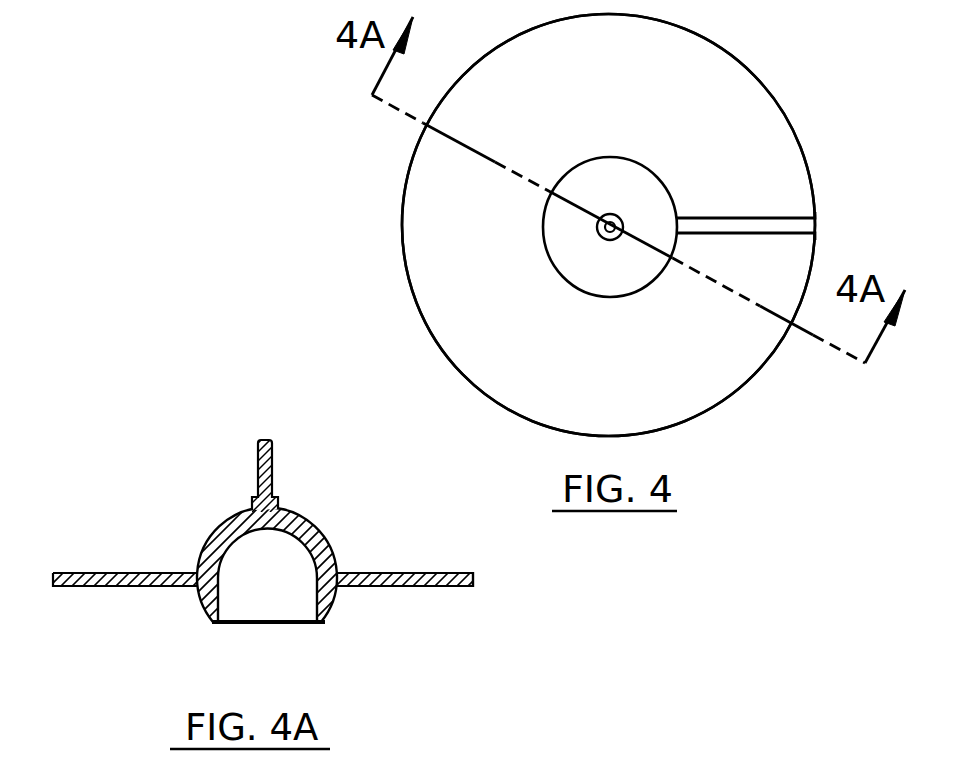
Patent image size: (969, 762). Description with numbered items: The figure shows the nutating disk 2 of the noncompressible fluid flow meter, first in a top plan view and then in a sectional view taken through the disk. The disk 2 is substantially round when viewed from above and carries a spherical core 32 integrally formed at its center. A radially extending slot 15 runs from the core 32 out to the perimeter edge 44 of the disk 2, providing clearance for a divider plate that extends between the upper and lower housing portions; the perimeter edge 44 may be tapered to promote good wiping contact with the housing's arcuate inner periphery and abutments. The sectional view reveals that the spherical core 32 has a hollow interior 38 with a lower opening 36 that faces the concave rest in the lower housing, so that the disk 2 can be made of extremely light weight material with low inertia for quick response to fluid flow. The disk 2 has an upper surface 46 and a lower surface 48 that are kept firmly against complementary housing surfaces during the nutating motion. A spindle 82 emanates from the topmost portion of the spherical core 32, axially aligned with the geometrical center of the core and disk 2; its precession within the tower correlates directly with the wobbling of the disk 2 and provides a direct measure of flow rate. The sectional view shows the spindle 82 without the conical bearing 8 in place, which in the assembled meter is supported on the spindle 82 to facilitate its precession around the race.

In FIG. 4, the nutating disk 2 is at (522, 395).
In FIG. 4A, the nutating disk 2 is at (425, 588).
In FIG. 4, the conical bearing 8 is at (598, 232).
In FIG. 4, the radially extending slot 15 is at (767, 229).
In FIG. 4, the spherical core 32 is at (541, 224).
In FIG. 4A, the spherical core 32 is at (220, 528).
In FIG. 4A, the lower opening 36 is at (265, 623).
In FIG. 4A, the hollow interior 38 is at (283, 593).
In FIG. 4, the perimeter edge 44 is at (407, 167).
In FIG. 4A, the perimeter edge 44 is at (473, 580).
In FIG. 4A, the upper surface 46 is at (78, 572).
In FIG. 4A, the lower surface 48 is at (100, 587).
In FIG. 4, the spindle 82 is at (606, 233).
In FIG. 4A, the spindle 82 is at (258, 452).